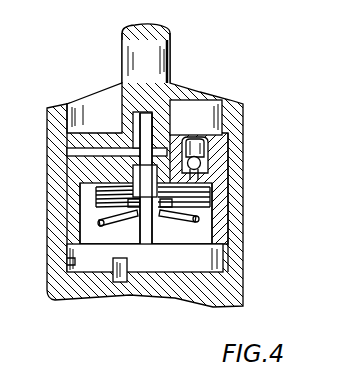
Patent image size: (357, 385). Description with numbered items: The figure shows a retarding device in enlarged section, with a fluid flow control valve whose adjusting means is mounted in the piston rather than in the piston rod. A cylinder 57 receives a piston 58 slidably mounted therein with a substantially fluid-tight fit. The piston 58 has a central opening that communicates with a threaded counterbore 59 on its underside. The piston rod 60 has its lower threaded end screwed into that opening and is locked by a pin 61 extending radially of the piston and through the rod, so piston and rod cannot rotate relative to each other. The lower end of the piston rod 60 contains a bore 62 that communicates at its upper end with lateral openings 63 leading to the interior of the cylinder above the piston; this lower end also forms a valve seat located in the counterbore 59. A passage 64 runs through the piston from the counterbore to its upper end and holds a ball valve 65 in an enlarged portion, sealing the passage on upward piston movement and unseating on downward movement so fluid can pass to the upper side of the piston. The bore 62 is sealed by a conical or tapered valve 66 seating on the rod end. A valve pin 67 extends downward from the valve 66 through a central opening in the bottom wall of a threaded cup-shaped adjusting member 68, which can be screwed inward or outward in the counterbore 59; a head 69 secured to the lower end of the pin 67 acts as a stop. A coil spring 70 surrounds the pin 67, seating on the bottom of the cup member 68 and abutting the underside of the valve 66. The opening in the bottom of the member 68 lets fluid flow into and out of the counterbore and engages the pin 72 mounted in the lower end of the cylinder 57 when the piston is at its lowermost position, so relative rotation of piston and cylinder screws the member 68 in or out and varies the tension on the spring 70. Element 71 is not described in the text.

The cylinder 57 is at (228, 222).
The piston 58 is at (80, 228).
The threaded counterbore 59 is at (230, 195).
The piston rod 60 is at (170, 57).
The pin 61 is at (68, 150).
The bore 62 is at (170, 110).
The openings 63 is at (123, 124).
The passage 64 is at (230, 170).
The ball valve 65 is at (230, 142).
The conical valve 66 is at (75, 183).
The valve pin 67 is at (128, 250).
The cup-shaped adjusting member 68 is at (222, 232).
The head 69 is at (157, 252).
The coil spring 70 is at (68, 243).
The seat 71 is at (68, 258).
The pin 72 is at (116, 290).